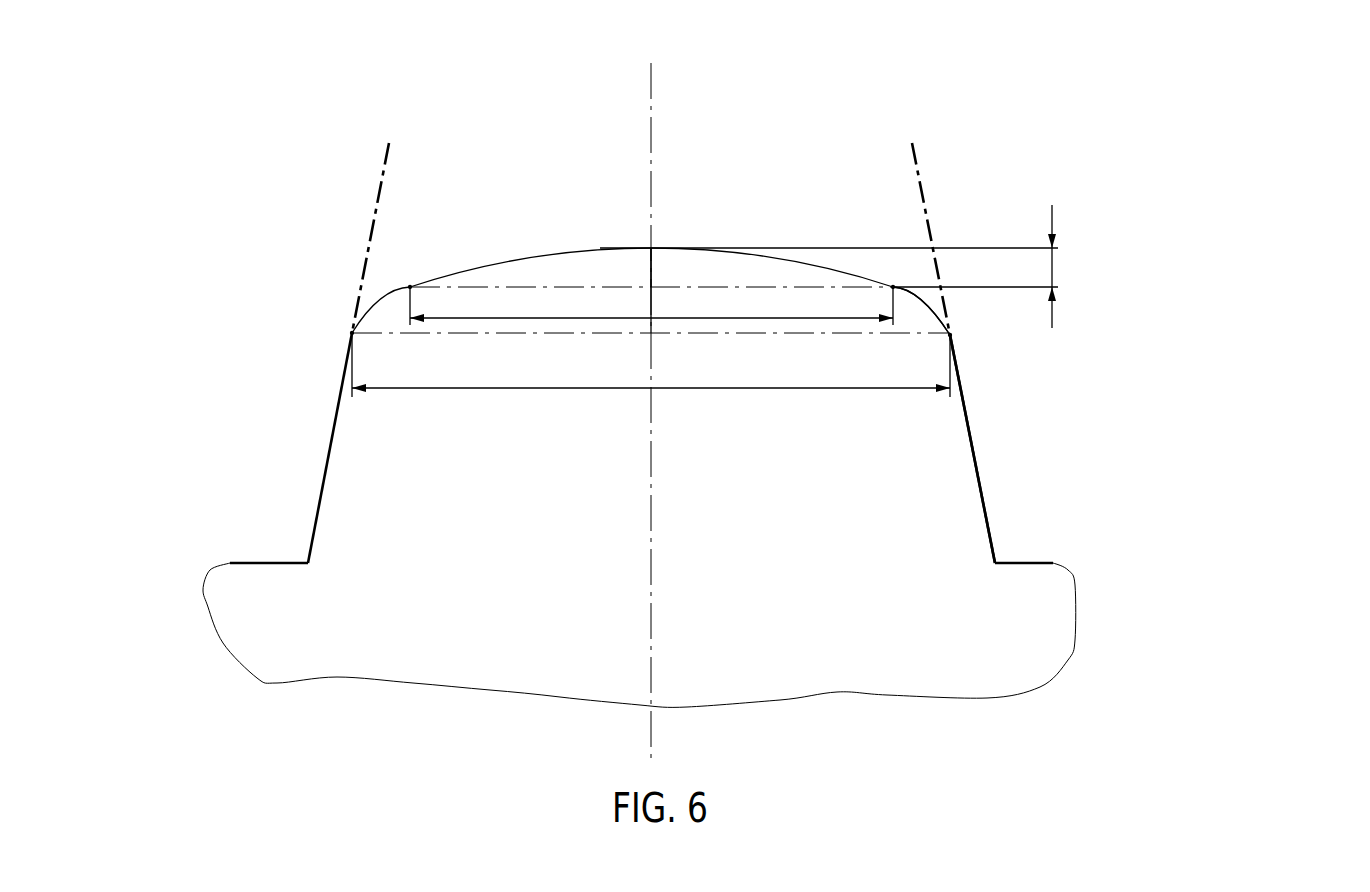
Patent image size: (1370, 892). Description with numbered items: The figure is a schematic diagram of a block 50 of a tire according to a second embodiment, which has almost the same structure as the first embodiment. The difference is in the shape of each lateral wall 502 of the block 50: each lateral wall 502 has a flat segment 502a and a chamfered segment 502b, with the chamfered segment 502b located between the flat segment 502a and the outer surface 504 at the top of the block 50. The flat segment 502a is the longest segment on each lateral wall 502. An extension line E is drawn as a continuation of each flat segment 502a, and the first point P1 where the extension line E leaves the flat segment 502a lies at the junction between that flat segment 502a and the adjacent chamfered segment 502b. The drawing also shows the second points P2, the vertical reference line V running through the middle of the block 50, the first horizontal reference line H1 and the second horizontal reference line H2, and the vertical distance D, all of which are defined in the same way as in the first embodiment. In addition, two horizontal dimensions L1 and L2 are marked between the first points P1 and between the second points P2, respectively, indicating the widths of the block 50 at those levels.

The block 50 is at (877, 517).
The lateral wall 502 is at (333, 427).
The flat segment 502a is at (970, 422).
The chamfered segment 502b is at (947, 313).
The outer surface 504 is at (548, 253).
The extension line E is at (387, 173).
The vertical reference line V is at (651, 78).
The first point P1 is at (352, 333).
The second point P2 is at (410, 287).
The width between first points L1 is at (485, 388).
The width between second points L2 is at (607, 318).
The first horizontal reference line H1 is at (782, 333).
The second horizontal reference line H2 is at (693, 285).
The vertical distance D is at (841, 266).